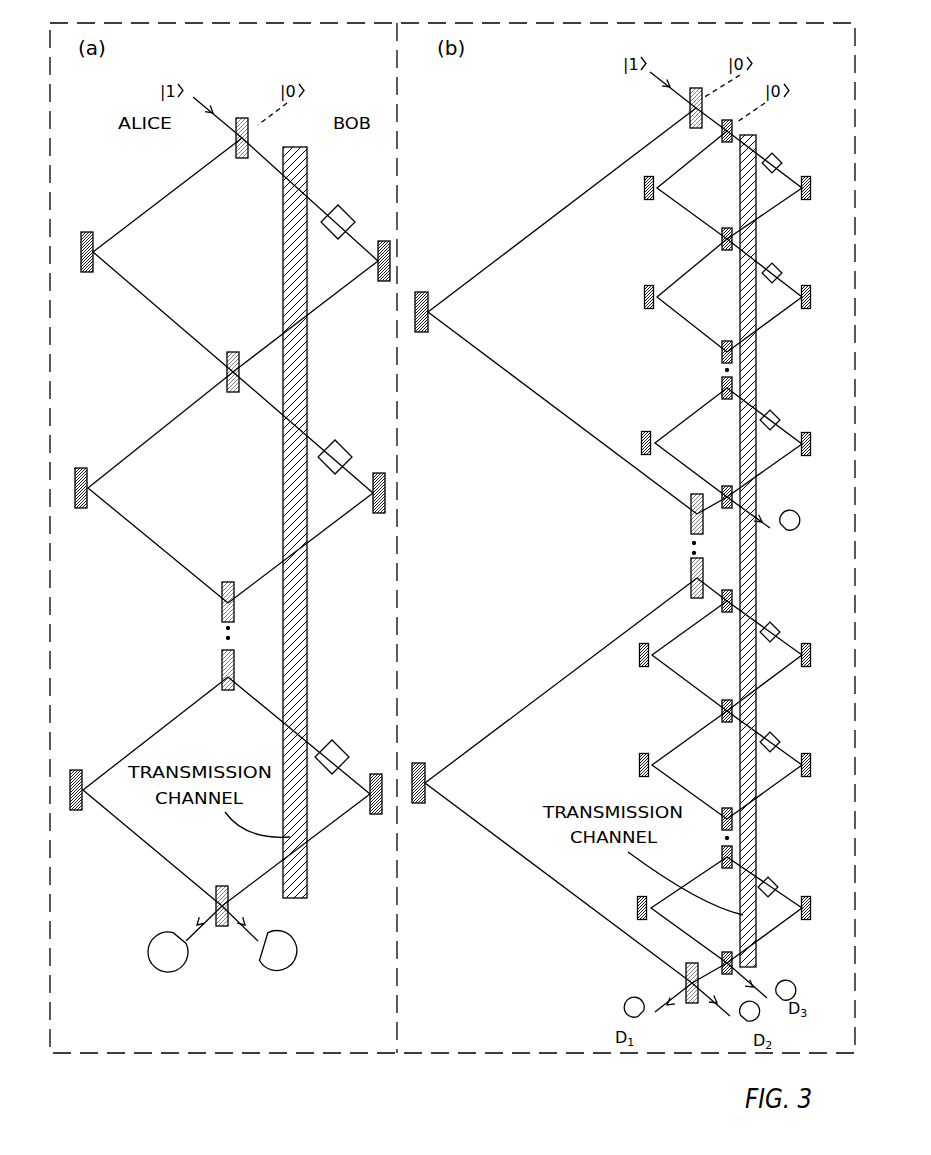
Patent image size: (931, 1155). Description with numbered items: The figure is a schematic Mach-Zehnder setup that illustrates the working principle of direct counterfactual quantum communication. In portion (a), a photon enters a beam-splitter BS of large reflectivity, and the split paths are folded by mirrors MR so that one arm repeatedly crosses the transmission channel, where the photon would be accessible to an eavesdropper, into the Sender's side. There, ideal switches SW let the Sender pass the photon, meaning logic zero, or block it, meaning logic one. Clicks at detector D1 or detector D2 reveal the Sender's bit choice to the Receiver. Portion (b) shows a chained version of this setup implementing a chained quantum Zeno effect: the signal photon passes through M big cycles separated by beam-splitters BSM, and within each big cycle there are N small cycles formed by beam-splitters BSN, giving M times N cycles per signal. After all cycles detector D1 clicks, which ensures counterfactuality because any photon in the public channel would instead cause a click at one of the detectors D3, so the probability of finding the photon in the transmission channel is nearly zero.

The beam-splitter BS is at (240, 152).
The ideal switch SW is at (338, 210).
The mirror MR is at (379, 279).
The detector D1 is at (168, 969).
The detector D2 is at (278, 969).
The detector D3 is at (796, 533).
The beam-splitter BS_M BSM is at (672, 108).
The beam-splitter BS_N BSN is at (731, 150).